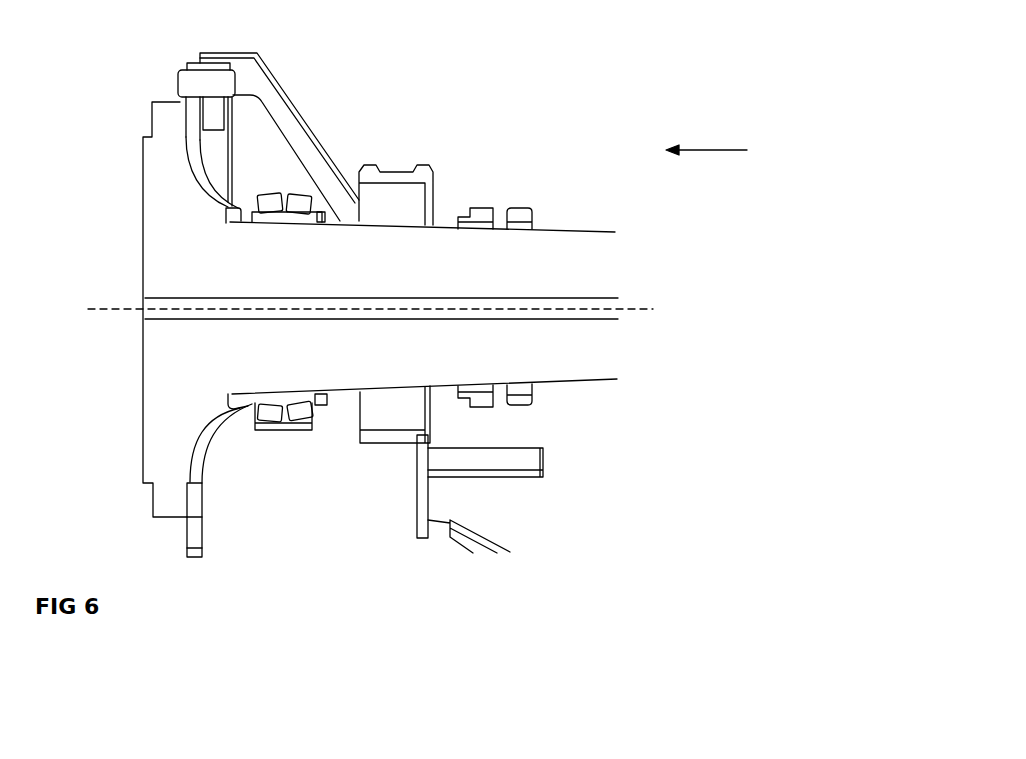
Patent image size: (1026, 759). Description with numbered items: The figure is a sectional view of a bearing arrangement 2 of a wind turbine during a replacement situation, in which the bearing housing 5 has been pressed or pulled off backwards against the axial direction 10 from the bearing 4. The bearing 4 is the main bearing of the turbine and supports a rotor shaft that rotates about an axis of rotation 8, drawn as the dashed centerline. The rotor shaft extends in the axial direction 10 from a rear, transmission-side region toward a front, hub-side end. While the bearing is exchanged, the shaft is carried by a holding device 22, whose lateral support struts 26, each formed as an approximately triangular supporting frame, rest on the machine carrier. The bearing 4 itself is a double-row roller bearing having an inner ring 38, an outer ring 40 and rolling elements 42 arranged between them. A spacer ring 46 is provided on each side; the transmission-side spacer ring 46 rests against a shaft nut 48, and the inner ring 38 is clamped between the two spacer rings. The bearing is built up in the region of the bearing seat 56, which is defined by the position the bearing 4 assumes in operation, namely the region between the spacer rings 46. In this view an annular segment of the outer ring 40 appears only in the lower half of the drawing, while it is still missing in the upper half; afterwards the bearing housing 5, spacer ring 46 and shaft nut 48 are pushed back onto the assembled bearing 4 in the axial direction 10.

The bearing arrangement 2 is at (356, 117).
The bearing 4 is at (277, 447).
The bearing housing 5 is at (422, 175).
The axis of rotation 8 is at (653, 310).
The axial direction 10 is at (735, 143).
The holding device 22 is at (274, 92).
The support strut 26 is at (283, 110).
The inner ring 38 is at (300, 496).
The outer ring 40 is at (303, 430).
The rolling elements 42 is at (300, 415).
The spacer ring 46 is at (480, 212).
The shaft nut 48 is at (522, 212).
The bearing seat 56 is at (289, 231).